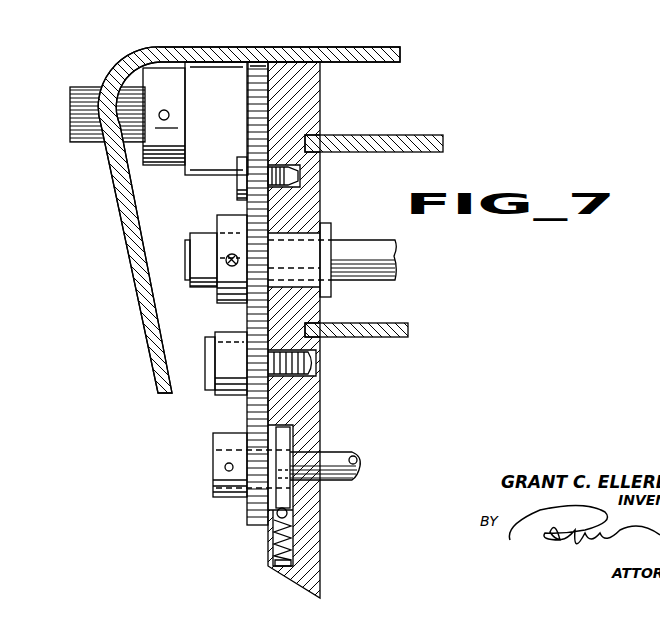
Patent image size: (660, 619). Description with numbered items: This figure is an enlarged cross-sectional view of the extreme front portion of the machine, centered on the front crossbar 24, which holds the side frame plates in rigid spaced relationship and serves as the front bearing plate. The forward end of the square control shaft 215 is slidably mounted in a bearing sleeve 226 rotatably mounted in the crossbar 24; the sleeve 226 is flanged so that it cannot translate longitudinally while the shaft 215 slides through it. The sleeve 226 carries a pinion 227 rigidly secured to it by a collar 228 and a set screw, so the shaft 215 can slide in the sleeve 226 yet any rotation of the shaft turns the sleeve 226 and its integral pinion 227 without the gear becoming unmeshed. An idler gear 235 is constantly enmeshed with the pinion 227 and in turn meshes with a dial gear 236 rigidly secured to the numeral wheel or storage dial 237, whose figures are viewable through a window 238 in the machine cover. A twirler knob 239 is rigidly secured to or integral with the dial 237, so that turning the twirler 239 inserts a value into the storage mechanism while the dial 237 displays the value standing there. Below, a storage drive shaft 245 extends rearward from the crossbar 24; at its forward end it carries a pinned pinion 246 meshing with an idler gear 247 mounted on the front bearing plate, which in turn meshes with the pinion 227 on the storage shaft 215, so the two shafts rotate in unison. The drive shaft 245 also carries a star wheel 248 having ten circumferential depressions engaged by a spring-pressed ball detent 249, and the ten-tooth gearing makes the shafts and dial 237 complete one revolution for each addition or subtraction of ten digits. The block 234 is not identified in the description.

The crossbar 24 is at (303, 92).
The control shaft 215 is at (352, 252).
The bearing sleeve 226 is at (298, 268).
The pinion 227 is at (256, 272).
The collar 228 is at (227, 225).
The gear block 234 is at (201, 118).
The idler gear 235 is at (238, 193).
The dial gear 236 is at (262, 62).
The numeral wheel 237 is at (258, 83).
The window 238 is at (191, 50).
The twirler knob 239 is at (73, 93).
The storage drive shaft 245 is at (340, 457).
The pinion 246 is at (255, 512).
The idler gear 247 is at (257, 362).
The star wheel 248 is at (283, 458).
The ball detent 249 is at (289, 515).